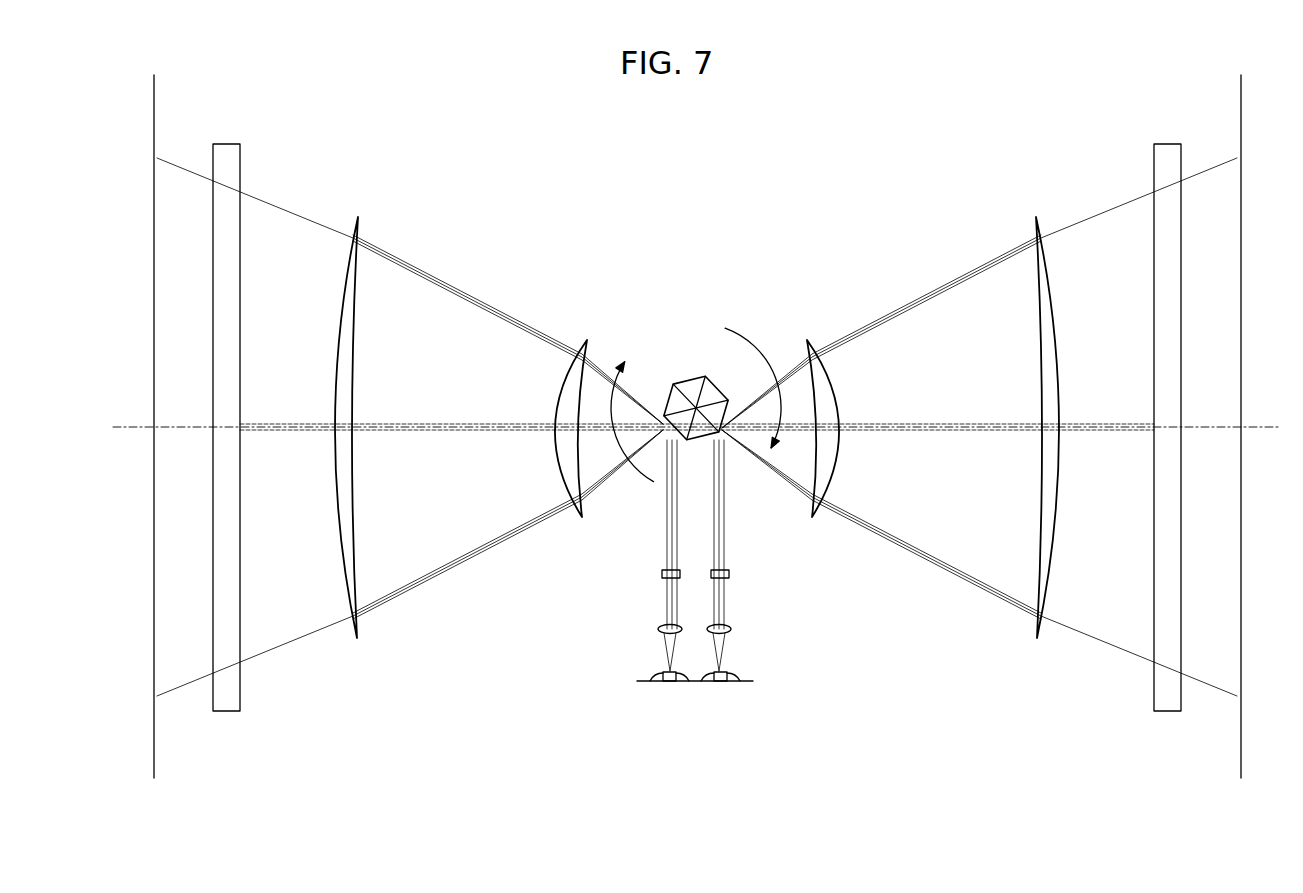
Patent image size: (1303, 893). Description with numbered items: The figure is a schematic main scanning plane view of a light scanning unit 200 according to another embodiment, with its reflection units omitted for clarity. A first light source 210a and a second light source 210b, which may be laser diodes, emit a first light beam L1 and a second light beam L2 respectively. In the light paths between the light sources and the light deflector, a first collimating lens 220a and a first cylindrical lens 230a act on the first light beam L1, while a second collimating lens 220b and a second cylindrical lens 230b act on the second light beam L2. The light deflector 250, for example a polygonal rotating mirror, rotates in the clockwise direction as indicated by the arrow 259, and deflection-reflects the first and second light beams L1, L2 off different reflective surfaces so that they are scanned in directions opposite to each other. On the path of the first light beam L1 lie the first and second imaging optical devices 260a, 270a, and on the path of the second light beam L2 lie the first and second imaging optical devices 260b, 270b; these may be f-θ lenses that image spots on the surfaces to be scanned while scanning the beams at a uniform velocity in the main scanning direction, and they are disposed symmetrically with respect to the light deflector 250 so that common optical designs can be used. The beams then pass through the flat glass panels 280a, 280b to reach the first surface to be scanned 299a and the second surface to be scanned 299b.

The light scanning unit 200 is at (988, 104).
The first light source 210a is at (652, 681).
The second light source 210b is at (732, 681).
The first collimating lens 220a is at (658, 629).
The second collimating lens 220b is at (731, 629).
The first cylindrical lens 230a is at (662, 574).
The second cylindrical lens 230b is at (729, 574).
The light deflector 250 is at (683, 380).
The rotation direction of polygon mirror 259 is at (738, 335).
The first imaging optical device of the first light beam 260a is at (558, 393).
The first imaging optical device of the second light beam 260b is at (835, 388).
The second imaging optical device of the first light beam 270a is at (340, 548).
The second imaging optical device of the second light beam 270b is at (1053, 385).
The flat glass panel 280a is at (242, 172).
The flat glass panel 280b is at (1154, 162).
The first surface to be scanned 299a is at (154, 738).
The second surface to be scanned 299b is at (1241, 740).
The first light beam L1 is at (665, 537).
The second light beam L2 is at (722, 537).